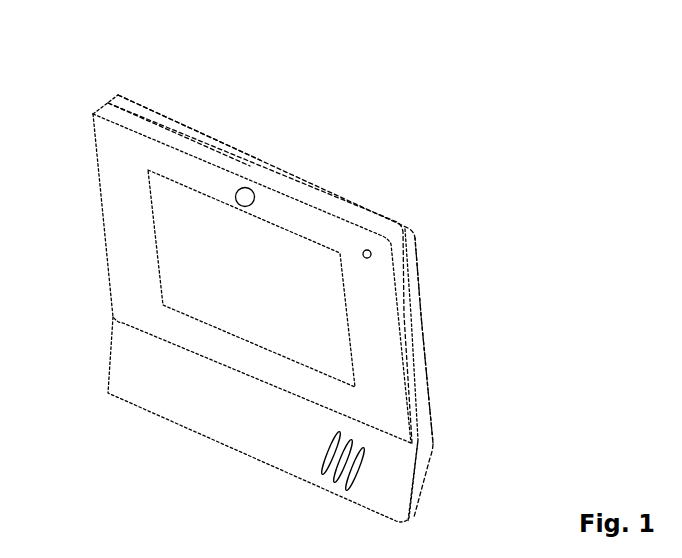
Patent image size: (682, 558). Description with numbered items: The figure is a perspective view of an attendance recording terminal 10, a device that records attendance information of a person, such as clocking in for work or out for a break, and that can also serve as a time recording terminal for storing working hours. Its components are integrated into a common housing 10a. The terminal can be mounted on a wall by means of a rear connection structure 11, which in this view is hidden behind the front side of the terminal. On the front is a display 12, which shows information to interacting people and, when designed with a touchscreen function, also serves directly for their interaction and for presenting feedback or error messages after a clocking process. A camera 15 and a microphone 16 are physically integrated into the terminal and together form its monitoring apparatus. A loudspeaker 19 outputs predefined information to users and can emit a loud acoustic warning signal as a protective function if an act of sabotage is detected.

The attendance recording terminal 10 is at (95, 57).
The common housing 10a is at (137, 124).
The rear connection structure 11 is at (480, 210).
The display 12 is at (183, 235).
The camera 15 is at (249, 188).
The microphone 16 is at (368, 250).
The loudspeaker 19 is at (311, 460).